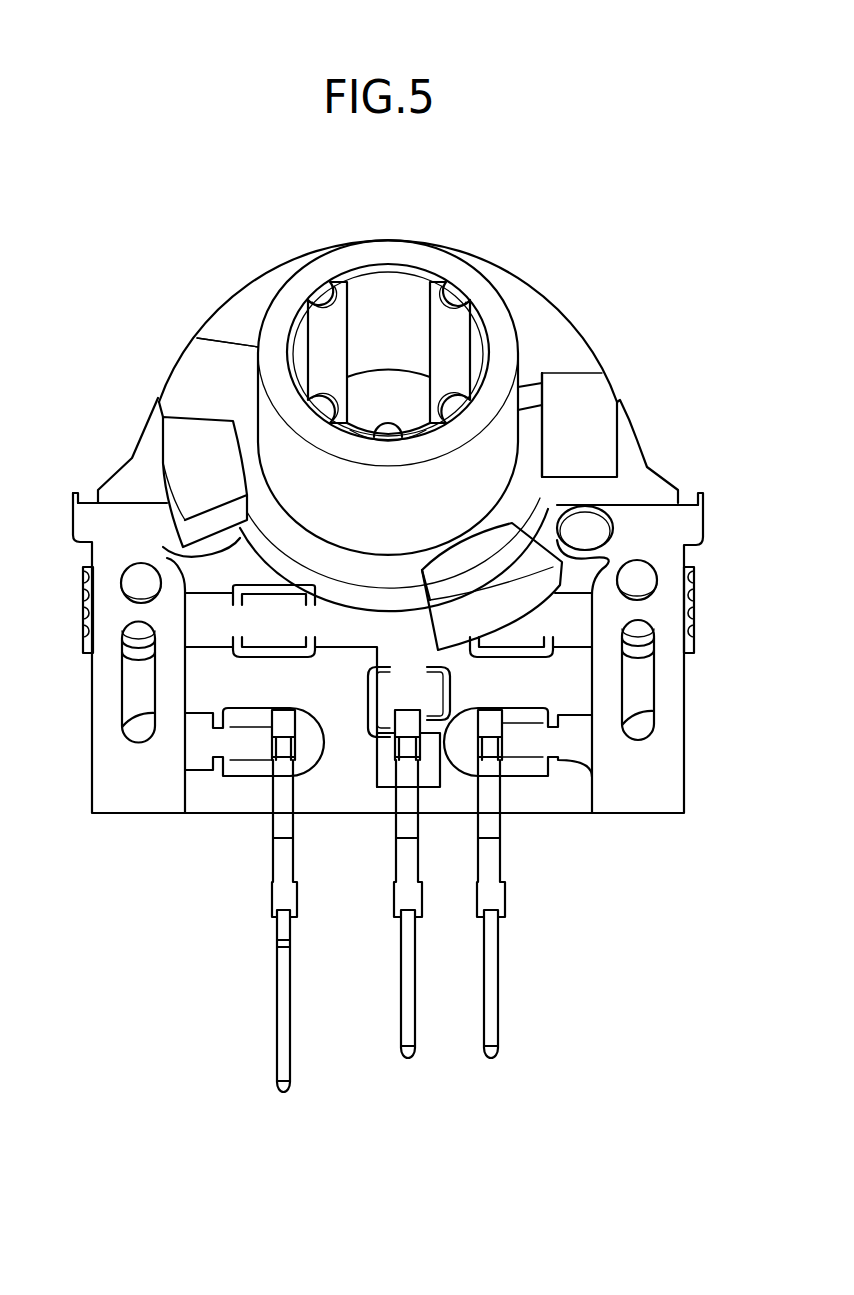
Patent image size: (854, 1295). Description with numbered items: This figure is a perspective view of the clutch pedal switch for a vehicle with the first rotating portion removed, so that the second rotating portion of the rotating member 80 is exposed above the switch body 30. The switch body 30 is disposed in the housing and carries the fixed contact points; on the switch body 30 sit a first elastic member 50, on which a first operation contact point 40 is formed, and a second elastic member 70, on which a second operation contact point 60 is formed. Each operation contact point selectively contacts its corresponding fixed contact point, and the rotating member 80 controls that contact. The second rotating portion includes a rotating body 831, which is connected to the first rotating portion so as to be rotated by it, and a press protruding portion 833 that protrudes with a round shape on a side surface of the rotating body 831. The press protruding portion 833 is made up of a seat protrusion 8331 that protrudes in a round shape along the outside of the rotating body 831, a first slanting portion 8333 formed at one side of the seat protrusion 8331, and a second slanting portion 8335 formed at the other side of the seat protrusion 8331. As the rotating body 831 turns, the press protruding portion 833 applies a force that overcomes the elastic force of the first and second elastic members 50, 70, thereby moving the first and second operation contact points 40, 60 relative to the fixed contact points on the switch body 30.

The switch body 30 is at (660, 478).
The first operation contact point 40 is at (641, 580).
The first elastic member 50 is at (670, 678).
The second operation contact point 60 is at (134, 578).
The second elastic member 70 is at (106, 677).
The rotating member 80 is at (394, 403).
The rotating body 831 is at (430, 258).
The press protruding portion 833 is at (283, 205).
The seat protrusion 8331 is at (245, 315).
The first slanting portion 8333 is at (197, 380).
The second slanting portion 8335 is at (573, 423).